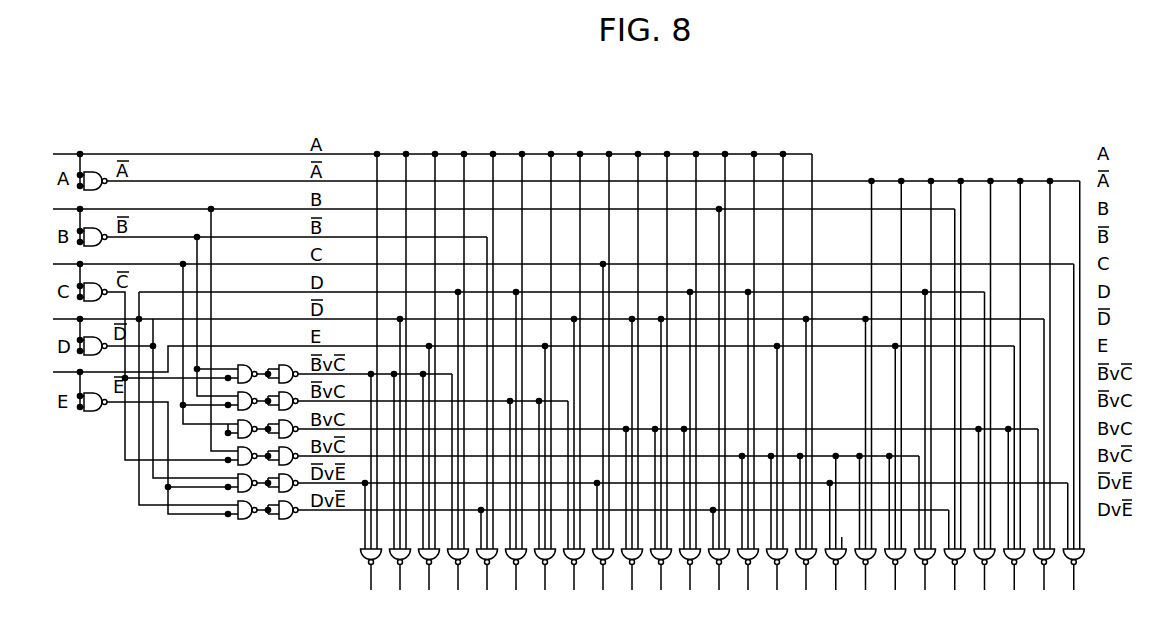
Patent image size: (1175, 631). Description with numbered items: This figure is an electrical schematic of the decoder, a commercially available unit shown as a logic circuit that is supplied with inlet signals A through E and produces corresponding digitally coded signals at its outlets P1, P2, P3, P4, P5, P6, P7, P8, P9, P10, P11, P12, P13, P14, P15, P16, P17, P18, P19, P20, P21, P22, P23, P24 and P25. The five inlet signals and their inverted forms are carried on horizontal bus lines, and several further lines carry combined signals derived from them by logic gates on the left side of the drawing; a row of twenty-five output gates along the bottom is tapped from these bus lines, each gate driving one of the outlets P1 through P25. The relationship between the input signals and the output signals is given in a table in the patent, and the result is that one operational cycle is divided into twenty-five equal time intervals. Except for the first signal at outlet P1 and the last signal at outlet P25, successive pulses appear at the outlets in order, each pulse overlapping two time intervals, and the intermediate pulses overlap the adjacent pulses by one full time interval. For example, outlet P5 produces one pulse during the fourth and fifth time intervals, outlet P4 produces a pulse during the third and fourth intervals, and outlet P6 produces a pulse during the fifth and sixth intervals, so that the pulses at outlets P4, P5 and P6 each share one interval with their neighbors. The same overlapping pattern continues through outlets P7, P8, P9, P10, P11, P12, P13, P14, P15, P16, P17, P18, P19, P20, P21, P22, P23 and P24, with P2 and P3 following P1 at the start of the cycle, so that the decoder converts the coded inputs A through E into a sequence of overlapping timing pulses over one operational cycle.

The decoder outlet P1 is at (371, 384).
The decoder outlet P2 is at (400, 384).
The decoder outlet P3 is at (429, 384).
The decoder outlet P4 is at (458, 384).
The decoder outlet P5 is at (487, 384).
The decoder outlet P6 is at (516, 384).
The decoder outlet P7 is at (545, 384).
The decoder outlet P8 is at (574, 384).
The decoder outlet P9 is at (603, 384).
The decoder outlet P10 is at (632, 384).
The decoder outlet P11 is at (661, 384).
The decoder outlet P12 is at (690, 384).
The decoder outlet P13 is at (719, 384).
The decoder outlet P14 is at (748, 384).
The decoder outlet P15 is at (777, 384).
The decoder outlet P16 is at (806, 384).
The decoder outlet P17 is at (836, 535).
The decoder outlet P18 is at (865, 398).
The decoder outlet P19 is at (895, 398).
The decoder outlet P20 is at (925, 398).
The decoder outlet P21 is at (955, 398).
The decoder outlet P22 is at (984, 398).
The decoder outlet P23 is at (1014, 398).
The decoder outlet P24 is at (1044, 398).
The decoder outlet P25 is at (1074, 398).